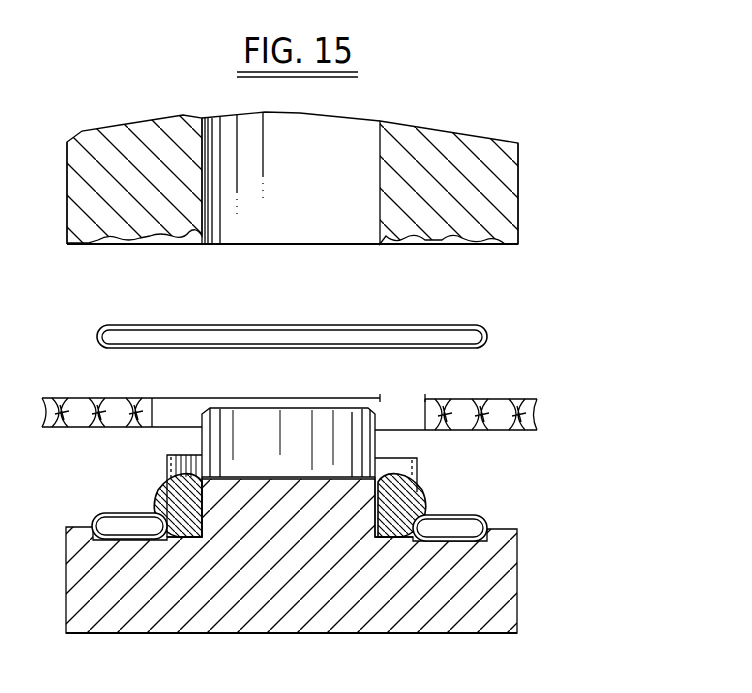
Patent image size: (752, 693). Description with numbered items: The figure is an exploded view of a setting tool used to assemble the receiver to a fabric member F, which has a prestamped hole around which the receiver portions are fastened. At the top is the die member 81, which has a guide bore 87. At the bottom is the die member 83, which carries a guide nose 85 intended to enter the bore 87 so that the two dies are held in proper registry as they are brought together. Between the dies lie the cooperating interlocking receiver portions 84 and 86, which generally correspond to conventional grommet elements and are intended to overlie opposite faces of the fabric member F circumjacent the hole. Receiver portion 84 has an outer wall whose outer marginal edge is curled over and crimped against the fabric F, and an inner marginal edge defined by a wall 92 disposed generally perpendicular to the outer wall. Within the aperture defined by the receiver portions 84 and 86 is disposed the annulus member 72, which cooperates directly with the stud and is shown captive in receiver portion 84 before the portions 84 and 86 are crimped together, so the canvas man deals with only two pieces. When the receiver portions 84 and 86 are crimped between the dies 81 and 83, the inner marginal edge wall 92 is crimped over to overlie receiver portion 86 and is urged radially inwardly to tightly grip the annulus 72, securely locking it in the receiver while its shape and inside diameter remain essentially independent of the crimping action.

The die member 81 is at (450, 150).
The guide bore 87 is at (202, 177).
The receiver portion 86 is at (473, 325).
The guide nose 85 is at (278, 407).
The annulus member 72 is at (392, 478).
The inner marginal edge wall 92 is at (427, 500).
The receiver portion 84 is at (450, 540).
The die member 83 is at (353, 626).
The fabric member F is at (537, 399).